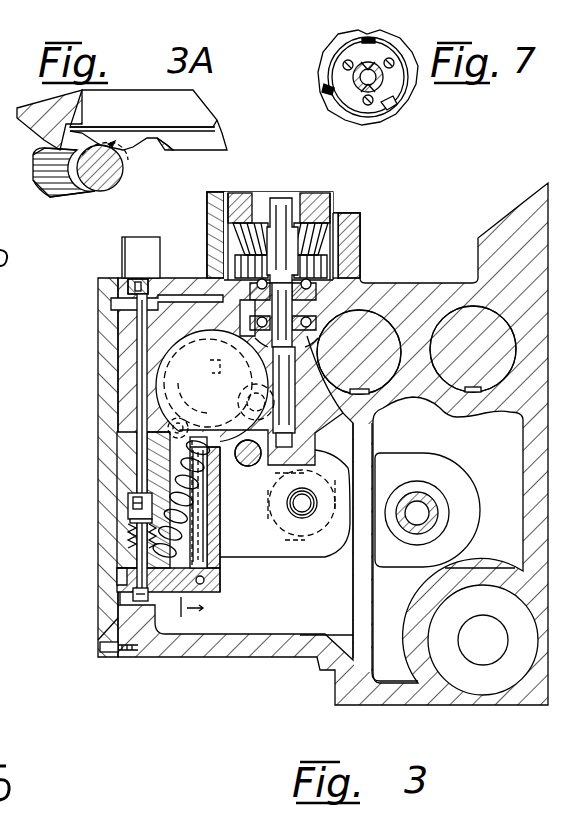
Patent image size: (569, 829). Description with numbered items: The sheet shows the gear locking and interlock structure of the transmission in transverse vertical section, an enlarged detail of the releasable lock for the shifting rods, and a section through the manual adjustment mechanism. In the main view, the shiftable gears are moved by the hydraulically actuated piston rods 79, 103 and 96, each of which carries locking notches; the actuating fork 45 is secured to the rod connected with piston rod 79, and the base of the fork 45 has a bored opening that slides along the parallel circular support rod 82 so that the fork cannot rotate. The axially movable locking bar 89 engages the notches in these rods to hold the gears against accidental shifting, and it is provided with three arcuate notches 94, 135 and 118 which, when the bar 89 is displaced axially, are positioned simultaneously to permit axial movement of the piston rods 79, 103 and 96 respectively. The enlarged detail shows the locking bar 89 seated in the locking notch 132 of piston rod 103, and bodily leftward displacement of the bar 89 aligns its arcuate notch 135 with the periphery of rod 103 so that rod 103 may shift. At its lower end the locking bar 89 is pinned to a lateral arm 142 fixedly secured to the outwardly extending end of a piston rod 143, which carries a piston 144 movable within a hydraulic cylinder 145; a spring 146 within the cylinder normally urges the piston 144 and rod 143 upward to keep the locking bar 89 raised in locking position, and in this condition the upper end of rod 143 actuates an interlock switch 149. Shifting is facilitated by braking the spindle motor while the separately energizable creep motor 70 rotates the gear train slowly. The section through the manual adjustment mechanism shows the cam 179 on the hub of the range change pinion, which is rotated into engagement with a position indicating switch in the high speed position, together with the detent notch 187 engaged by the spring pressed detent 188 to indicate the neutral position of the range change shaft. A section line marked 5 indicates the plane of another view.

In FIG. 3, the section line 5- 5 is at (197, 607).
In FIG. 3, the actuating fork 45 is at (220, 373).
In FIG. 3, the creep motor 70 is at (320, 215).
In FIG. 3, the piston rod 79 is at (208, 466).
In FIG. 3, the circular support rod 82 is at (236, 392).
In FIG. 3, the locking bar 89 is at (217, 587).
In FIG. 3A, the locking bar 89 is at (152, 100).
In FIG. 3, the arcuate notch 94 is at (192, 432).
In FIG. 3, the piston rod 96 is at (219, 568).
In FIG. 3, the piston rod 103 is at (190, 510).
In FIG. 3A, the piston rod 103 is at (72, 190).
In FIG. 3, the arcuate notch 118 is at (200, 528).
In FIG. 3A, the locking notch 132 is at (118, 160).
In FIG. 3, the arcuate notch 135 is at (205, 490).
In FIG. 3A, the arcuate notch 135 is at (157, 150).
In FIG. 3, the lateral arm 142 is at (148, 605).
In FIG. 3, the piston rod 143 is at (137, 458).
In FIG. 3, the piston 144 is at (130, 521).
In FIG. 3, the hydraulic cylinder 145 is at (128, 507).
In FIG. 3, the spring 146 is at (128, 546).
In FIG. 3, the interlock switch 149 is at (158, 246).
In FIG. 7, the cam 179 is at (379, 112).
In FIG. 7, the detent notch 187 is at (330, 90).
In FIG. 7, the spring pressed detent 188 is at (365, 110).